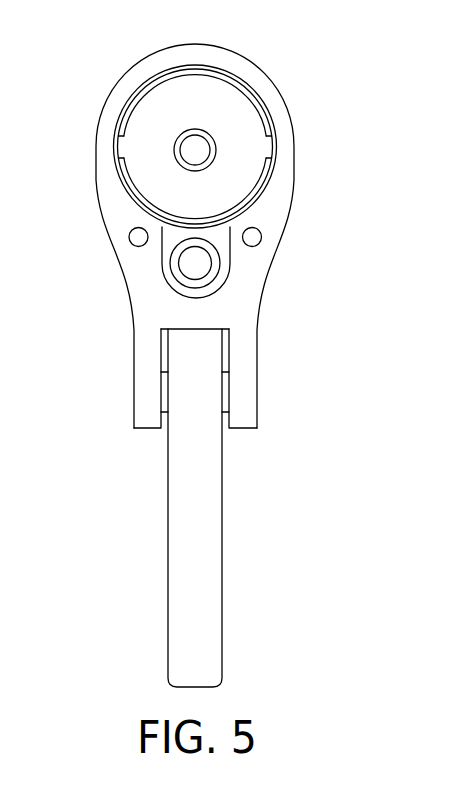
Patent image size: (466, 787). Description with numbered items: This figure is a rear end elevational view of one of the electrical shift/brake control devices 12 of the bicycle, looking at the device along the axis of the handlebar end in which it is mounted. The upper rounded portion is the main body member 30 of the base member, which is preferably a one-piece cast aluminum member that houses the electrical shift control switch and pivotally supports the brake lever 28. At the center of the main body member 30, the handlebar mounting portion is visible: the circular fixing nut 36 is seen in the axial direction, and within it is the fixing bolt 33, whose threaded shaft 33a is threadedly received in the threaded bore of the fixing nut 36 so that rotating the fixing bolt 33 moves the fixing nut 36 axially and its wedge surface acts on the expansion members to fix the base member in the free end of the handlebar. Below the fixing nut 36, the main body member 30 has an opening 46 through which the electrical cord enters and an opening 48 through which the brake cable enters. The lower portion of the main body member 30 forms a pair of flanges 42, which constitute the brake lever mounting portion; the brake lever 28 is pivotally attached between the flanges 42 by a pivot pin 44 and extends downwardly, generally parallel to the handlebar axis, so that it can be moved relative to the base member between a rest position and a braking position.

The electrical shift/brake control device 12 is at (215, 351).
The main body member 30 is at (110, 91).
The fixing bolt 33 is at (208, 130).
The threaded shaft 33a is at (193, 150).
The fixing nut 36 is at (160, 183).
The opening 46 is at (135, 247).
The opening 48 is at (207, 270).
The flanges 42 is at (150, 353).
The pivot pin 44 is at (165, 394).
The brake lever 28 is at (226, 553).